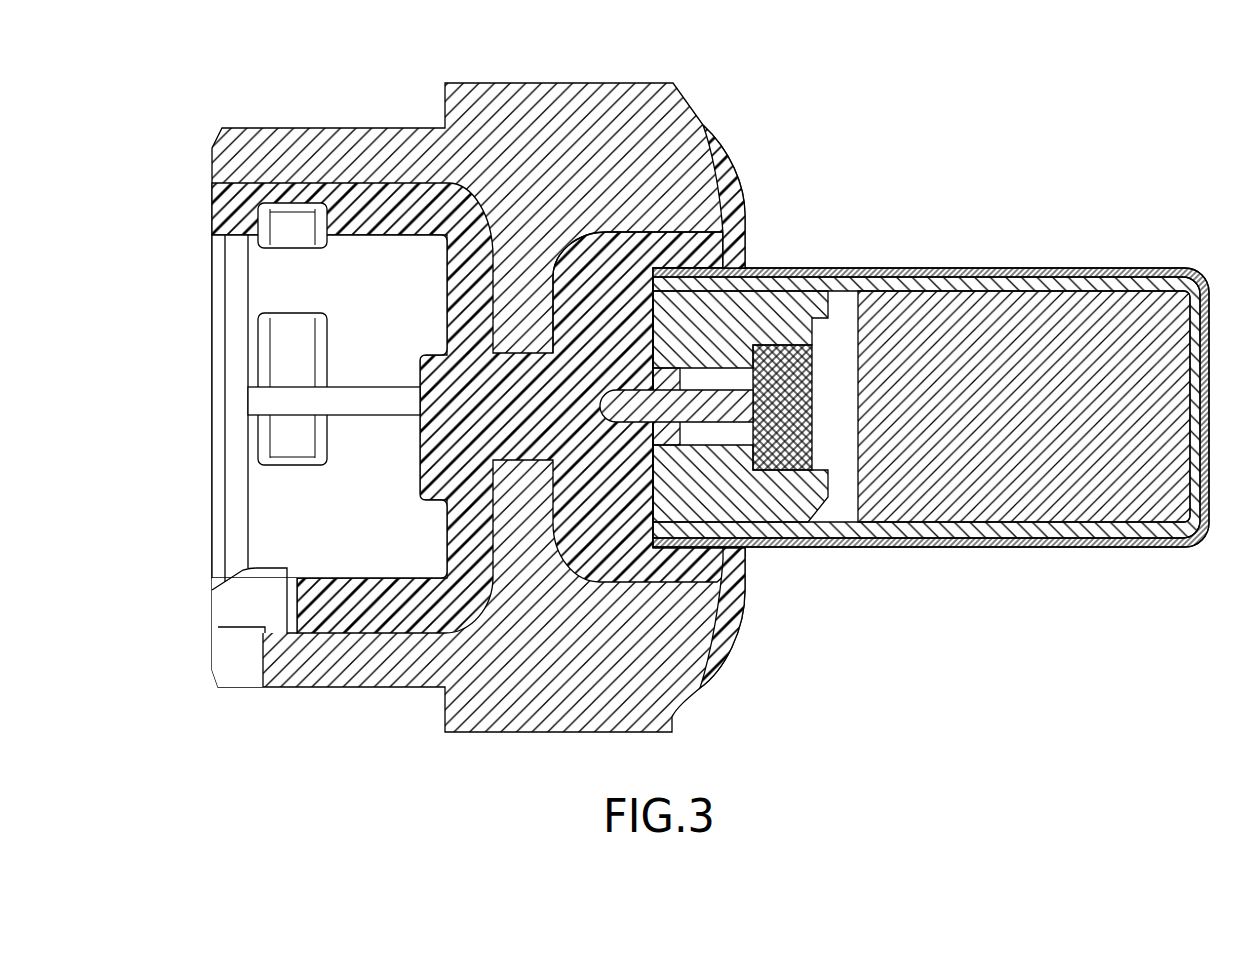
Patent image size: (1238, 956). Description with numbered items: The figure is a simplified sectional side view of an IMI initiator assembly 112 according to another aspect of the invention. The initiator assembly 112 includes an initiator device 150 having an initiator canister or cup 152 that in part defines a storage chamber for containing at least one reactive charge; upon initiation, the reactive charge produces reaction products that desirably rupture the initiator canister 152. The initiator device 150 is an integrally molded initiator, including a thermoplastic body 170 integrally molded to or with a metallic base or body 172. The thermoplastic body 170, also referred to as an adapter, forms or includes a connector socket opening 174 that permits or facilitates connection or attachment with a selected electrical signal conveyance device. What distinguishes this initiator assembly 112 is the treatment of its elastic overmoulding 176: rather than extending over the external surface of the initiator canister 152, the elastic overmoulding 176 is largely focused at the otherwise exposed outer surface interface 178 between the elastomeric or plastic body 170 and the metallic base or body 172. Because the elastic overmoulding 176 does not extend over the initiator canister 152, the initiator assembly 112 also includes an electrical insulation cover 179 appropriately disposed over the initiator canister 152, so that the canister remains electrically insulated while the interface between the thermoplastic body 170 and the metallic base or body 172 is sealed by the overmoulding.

The IMI initiator assembly 112 is at (650, 397).
The initiator device 150 is at (904, 460).
The initiator canister or cup 152 is at (982, 282).
The thermoplastic body 170 is at (597, 557).
The metallic base or body 172 is at (598, 100).
The connector socket opening 174 is at (197, 354).
The elastic overmoulding 176 is at (730, 163).
The outer surface interface 178 is at (717, 205).
The electrical insulation cover 179 is at (1088, 272).